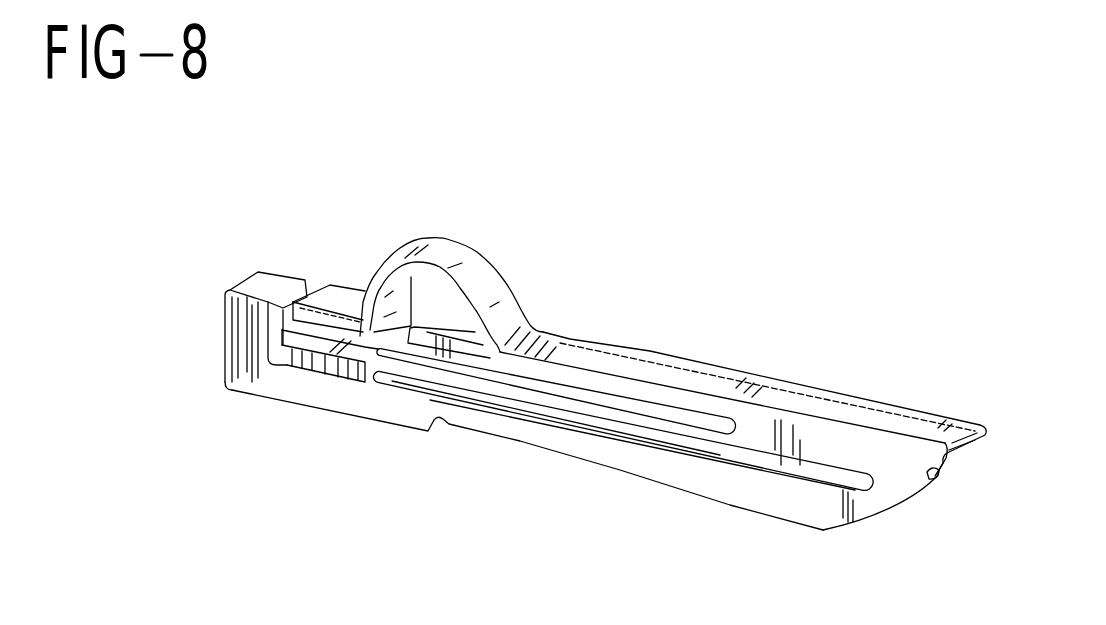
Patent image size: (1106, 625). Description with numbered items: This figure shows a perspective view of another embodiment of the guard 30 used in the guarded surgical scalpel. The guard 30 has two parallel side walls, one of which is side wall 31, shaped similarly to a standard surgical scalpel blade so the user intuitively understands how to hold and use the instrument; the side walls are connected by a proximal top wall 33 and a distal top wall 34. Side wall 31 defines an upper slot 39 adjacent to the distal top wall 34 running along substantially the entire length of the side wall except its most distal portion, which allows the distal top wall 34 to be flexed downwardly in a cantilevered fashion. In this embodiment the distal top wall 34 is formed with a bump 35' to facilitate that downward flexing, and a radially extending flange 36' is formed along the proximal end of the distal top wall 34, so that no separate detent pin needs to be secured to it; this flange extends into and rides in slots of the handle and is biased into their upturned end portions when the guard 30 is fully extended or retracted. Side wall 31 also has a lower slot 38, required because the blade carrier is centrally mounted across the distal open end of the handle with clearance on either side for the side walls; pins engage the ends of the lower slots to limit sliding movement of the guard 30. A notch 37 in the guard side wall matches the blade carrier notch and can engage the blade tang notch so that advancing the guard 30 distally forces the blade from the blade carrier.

The guard 30 is at (873, 410).
The side wall 31 is at (810, 512).
The proximal top wall 33 is at (265, 297).
The distal top wall 34 is at (722, 367).
The bump 35' is at (461, 253).
The radially extending flange 36' is at (262, 380).
The notch 37 is at (943, 478).
The lower slot 38 is at (740, 462).
The upper slot 39 is at (613, 403).